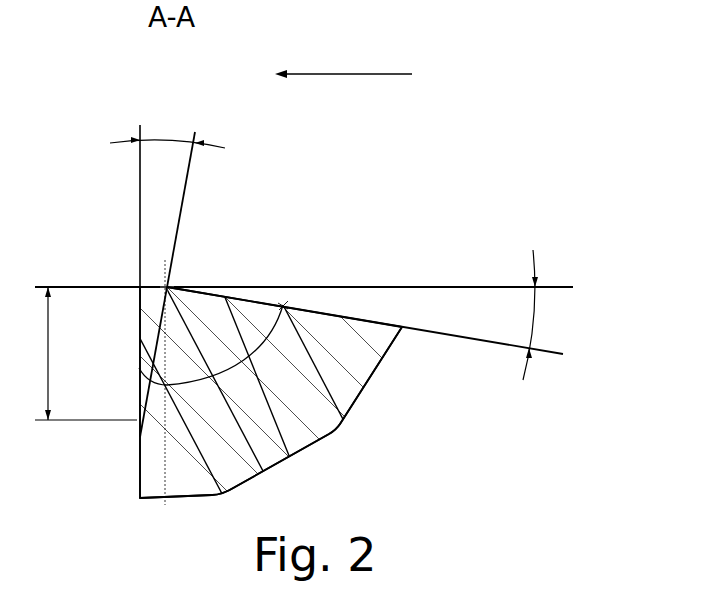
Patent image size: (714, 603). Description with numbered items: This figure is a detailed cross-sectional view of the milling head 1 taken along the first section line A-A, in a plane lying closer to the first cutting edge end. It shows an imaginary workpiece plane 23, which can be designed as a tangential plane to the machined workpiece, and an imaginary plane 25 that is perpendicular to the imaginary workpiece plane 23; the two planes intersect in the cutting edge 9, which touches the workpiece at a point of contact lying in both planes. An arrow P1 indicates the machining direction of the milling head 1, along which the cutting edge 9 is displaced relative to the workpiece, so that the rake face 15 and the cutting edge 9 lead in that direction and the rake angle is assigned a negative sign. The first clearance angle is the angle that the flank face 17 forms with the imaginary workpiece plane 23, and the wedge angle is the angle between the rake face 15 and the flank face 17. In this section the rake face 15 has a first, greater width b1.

The milling head 1 is at (301, 191).
The cutting edge 9 is at (166, 286).
The rake face 15 is at (156, 329).
The flank face 17 is at (283, 305).
The imaginary workpiece plane 23 is at (443, 287).
The imaginary plane 25 is at (162, 435).
The first width of the rake face b1 is at (78, 353).
The arrow indicating machining direction P1 is at (351, 74).